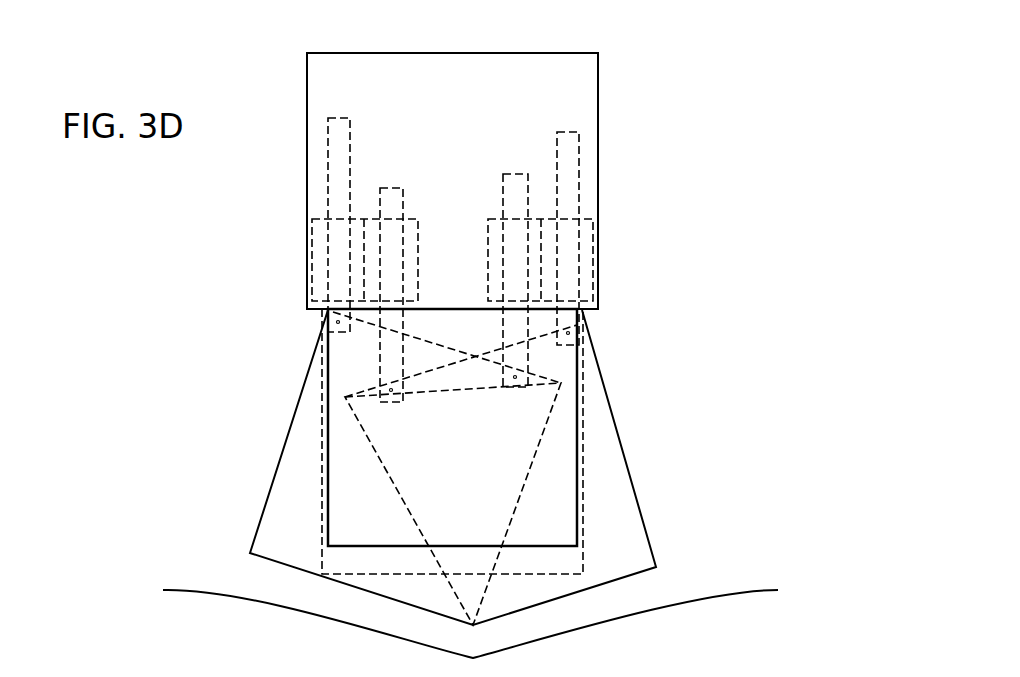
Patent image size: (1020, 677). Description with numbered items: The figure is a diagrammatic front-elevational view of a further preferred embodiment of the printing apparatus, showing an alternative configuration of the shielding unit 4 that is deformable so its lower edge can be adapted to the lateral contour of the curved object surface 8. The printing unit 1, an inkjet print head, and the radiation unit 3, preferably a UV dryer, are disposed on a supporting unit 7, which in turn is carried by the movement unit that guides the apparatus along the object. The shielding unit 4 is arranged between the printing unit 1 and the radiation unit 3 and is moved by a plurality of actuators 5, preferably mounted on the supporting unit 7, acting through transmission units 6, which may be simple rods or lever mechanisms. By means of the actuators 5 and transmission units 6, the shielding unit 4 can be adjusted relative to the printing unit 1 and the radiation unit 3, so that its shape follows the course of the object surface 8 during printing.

The printing unit 1 is at (323, 463).
The radiation unit 3 is at (577, 460).
The shielding unit 4 is at (266, 506).
The actuator 5 is at (418, 232).
The transmission unit 6 is at (393, 197).
The supporting unit 7 is at (578, 90).
The object surface 8 is at (742, 590).